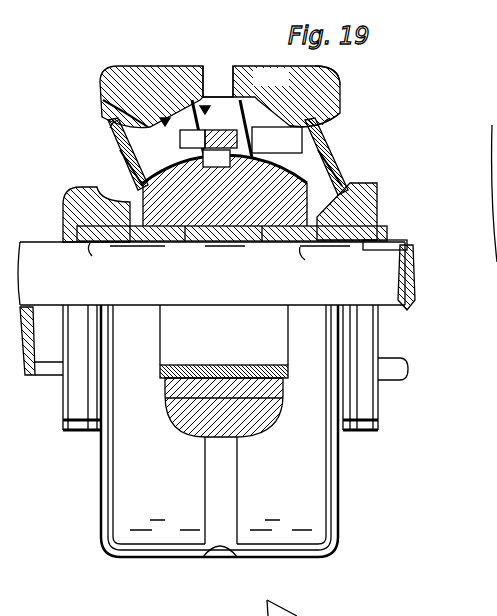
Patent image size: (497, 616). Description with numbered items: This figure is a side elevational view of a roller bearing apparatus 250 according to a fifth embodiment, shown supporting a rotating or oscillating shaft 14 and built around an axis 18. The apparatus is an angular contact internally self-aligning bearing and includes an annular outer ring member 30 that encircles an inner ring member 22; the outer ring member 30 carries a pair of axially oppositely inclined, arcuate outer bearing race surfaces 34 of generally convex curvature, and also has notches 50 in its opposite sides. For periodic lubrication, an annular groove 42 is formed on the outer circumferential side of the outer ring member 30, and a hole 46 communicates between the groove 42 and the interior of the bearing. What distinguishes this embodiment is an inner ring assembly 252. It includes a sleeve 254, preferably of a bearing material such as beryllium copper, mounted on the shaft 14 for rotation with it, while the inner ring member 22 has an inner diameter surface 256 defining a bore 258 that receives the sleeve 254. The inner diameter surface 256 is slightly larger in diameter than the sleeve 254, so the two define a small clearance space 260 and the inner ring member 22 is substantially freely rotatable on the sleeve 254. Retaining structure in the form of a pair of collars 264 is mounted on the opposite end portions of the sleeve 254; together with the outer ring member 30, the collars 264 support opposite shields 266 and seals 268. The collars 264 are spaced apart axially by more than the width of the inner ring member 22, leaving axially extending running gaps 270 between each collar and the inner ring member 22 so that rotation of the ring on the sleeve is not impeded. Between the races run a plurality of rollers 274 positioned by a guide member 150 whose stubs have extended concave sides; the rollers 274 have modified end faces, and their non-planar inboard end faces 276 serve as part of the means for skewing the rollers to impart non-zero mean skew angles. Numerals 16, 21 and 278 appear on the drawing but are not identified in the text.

The shaft 14 is at (400, 381).
The bearing seat 16 is at (362, 190).
The axis 18 is at (211, 273).
The crimped tabs 21 is at (165, 120).
The inner ring member 22 is at (266, 243).
The outer ring member 30 is at (118, 70).
The outer bearing race surfaces 34 is at (103, 100).
The annular groove 42 is at (217, 552).
The hole 46 is at (232, 72).
The notches 50 is at (112, 127).
The guide member 150 is at (312, 615).
The roller bearing apparatus 250 is at (403, 82).
The inner ring assembly 252 is at (386, 186).
The sleeve 254 is at (410, 250).
The inner diameter surface 256 is at (214, 243).
The bore 258 is at (168, 368).
The clearance space 260 is at (283, 366).
The collars 264 is at (85, 432).
The shields 266 is at (110, 140).
The seals 268 is at (112, 170).
The running gaps 270 is at (90, 243).
The rollers 274 is at (52, 214).
The non-planar inboard end faces 276 is at (225, 188).
The race surface 278 is at (225, 204).